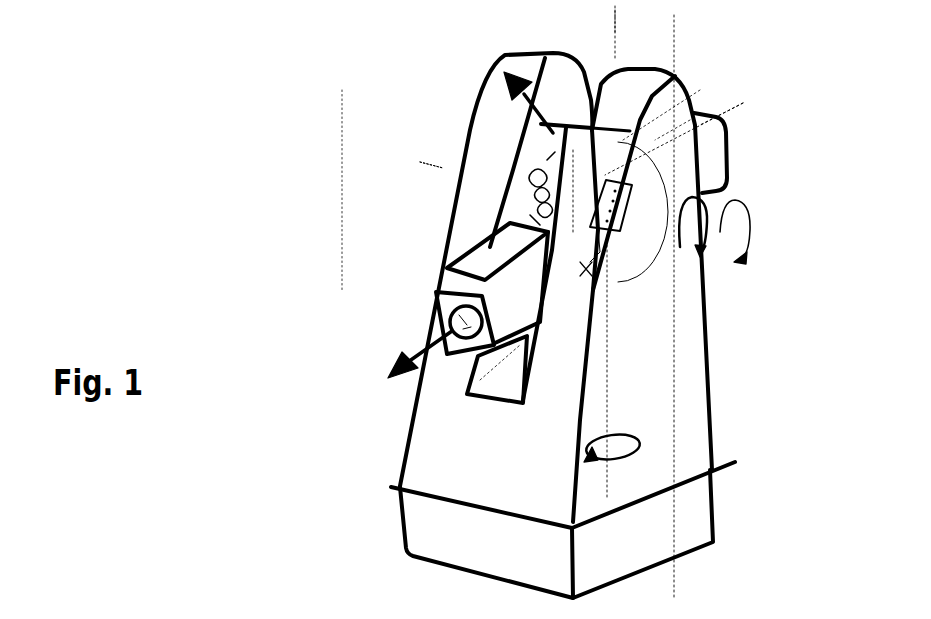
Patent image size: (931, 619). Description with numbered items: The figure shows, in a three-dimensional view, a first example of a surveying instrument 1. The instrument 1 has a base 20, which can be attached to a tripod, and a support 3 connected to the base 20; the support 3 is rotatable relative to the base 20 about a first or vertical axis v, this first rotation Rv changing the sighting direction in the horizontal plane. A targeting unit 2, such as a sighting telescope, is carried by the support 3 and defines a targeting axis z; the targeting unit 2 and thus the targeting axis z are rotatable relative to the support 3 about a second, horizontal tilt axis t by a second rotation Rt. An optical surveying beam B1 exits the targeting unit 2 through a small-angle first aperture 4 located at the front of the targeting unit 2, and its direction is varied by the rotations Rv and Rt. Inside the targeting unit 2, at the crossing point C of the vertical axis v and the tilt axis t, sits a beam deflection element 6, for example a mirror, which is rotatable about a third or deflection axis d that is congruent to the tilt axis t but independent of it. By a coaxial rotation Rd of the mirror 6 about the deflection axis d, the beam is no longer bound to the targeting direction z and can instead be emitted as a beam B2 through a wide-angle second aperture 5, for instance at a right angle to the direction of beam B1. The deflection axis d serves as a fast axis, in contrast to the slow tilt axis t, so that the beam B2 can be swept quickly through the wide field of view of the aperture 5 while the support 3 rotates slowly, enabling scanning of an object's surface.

The surveying instrument 1 is at (456, 44).
The targeting unit 2 is at (492, 313).
The support 3 is at (563, 484).
The first aperture 4 is at (458, 317).
The second aperture 5 is at (543, 199).
The beam deflection element 6 is at (620, 227).
The base 20 is at (556, 534).
The optical surveying beam B1 is at (423, 362).
The second beam B2 is at (524, 88).
The crossing point C is at (597, 198).
The vertical axis v is at (614, 21).
The targeting axis z is at (743, 103).
The deflection axis d is at (437, 163).
The tilt axis t is at (431, 165).
The second rotation Rt is at (713, 196).
The coaxial rotation Rd is at (745, 262).
The first rotation Rv is at (640, 434).